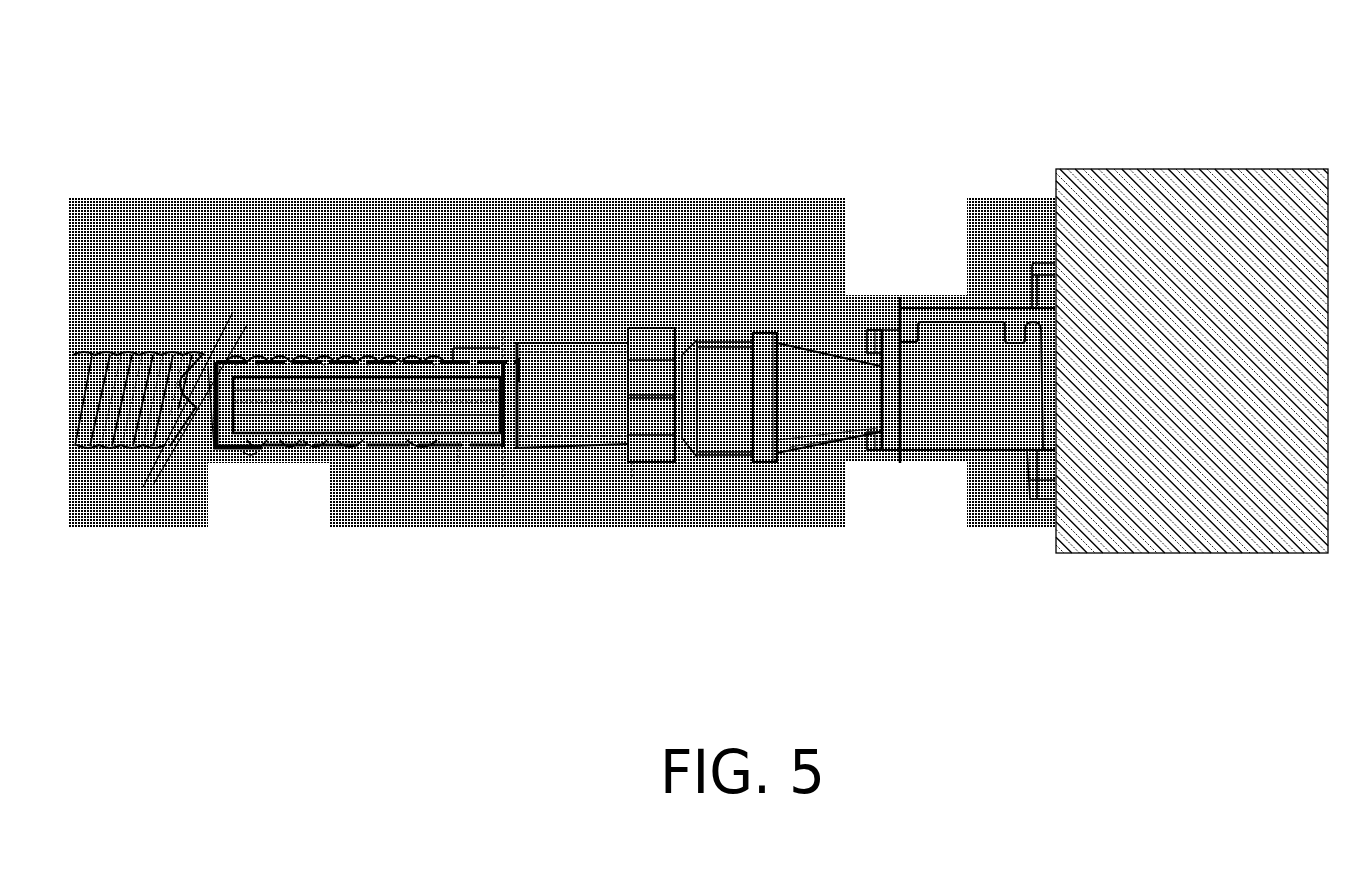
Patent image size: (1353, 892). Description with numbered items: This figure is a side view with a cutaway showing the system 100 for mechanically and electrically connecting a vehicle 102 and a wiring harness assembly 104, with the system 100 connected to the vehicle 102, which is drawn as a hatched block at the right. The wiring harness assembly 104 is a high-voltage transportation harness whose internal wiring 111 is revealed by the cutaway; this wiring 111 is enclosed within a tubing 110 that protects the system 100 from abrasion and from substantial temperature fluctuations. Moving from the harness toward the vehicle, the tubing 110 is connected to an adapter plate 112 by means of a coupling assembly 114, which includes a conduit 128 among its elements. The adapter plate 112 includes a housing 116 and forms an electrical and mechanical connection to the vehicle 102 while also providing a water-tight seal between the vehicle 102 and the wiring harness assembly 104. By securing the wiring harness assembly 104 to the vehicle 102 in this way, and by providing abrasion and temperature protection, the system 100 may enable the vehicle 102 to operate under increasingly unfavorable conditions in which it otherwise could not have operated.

The system 100 is at (188, 263).
The vehicle 102 is at (1070, 169).
The wiring harness assembly 104 is at (318, 347).
The tubing 110 is at (337, 352).
The wiring 111 is at (348, 413).
The adapter plate 112 is at (758, 283).
The coupling assembly 114 is at (613, 302).
The housing 116 is at (817, 347).
The conduit 128 is at (548, 342).